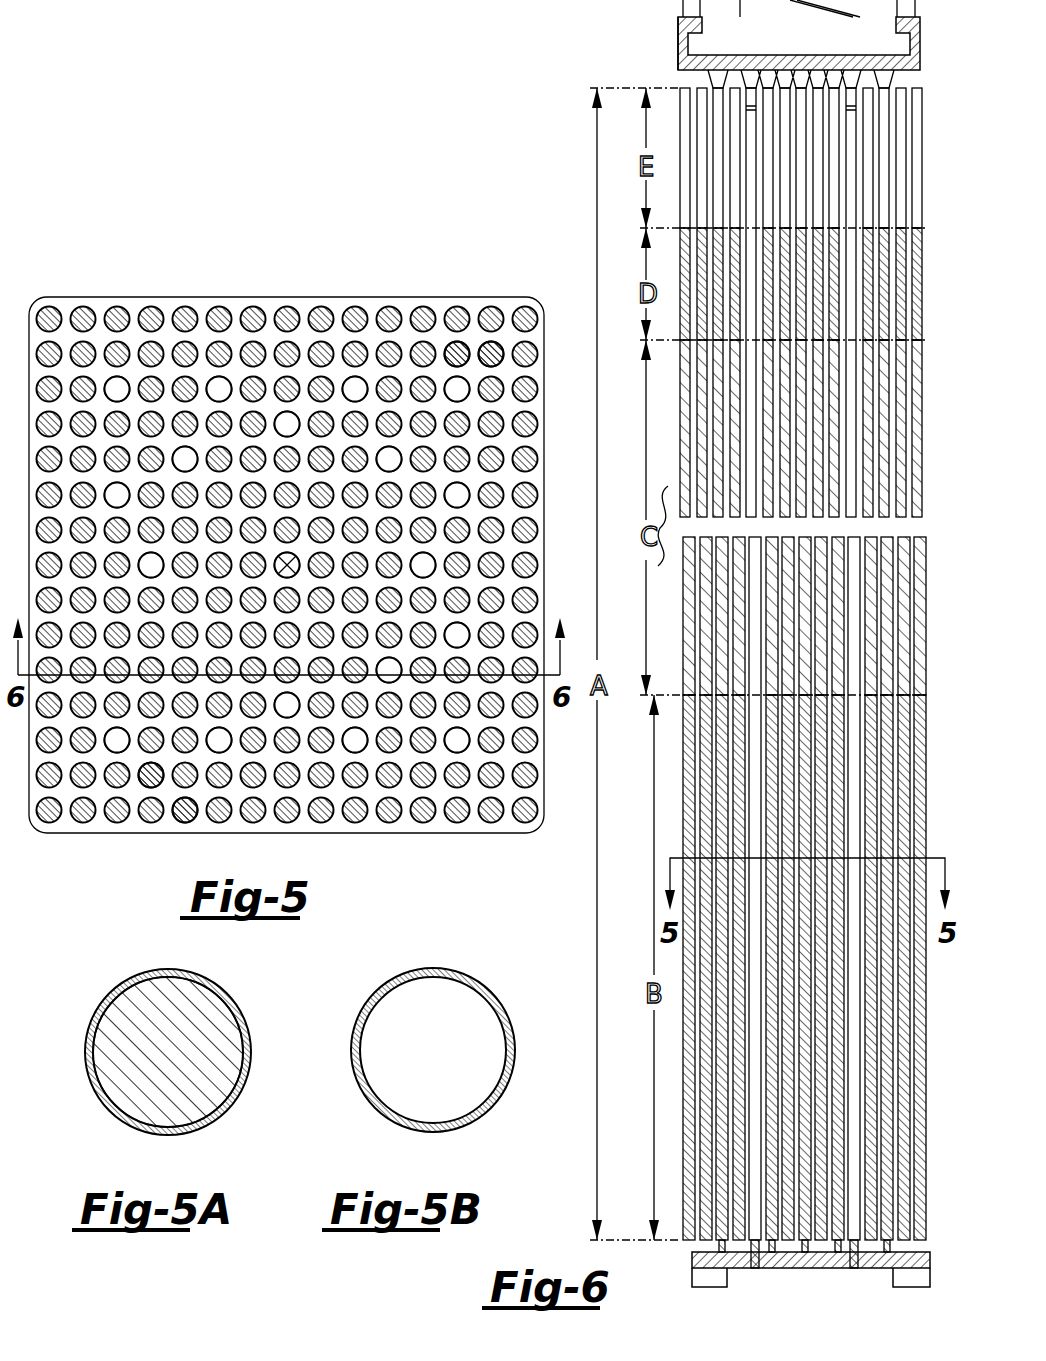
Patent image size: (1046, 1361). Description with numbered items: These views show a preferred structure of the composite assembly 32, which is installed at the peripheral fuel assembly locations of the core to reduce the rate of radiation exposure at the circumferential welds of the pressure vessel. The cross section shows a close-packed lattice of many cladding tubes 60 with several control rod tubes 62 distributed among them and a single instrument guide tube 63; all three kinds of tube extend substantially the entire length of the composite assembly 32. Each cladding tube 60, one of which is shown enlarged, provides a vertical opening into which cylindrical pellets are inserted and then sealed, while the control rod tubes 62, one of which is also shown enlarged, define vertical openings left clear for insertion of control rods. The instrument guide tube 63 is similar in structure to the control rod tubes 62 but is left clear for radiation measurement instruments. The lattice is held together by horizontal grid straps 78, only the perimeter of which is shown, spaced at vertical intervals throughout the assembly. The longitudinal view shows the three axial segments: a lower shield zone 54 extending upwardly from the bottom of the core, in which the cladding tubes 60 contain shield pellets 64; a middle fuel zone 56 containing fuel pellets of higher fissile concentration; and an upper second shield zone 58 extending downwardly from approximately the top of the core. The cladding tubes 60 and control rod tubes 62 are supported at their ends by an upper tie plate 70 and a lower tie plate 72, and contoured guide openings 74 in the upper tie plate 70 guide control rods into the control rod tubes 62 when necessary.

In FIG. 5, the composite assembly 32 is at (194, 278).
In FIG. 6, the composite assembly 32 is at (633, 66).
In FIG. 6, the shield zone 54 is at (870, 770).
In FIG. 6, the fuel zone 56 is at (710, 418).
In FIG. 6, the second shield zone 58 is at (710, 275).
In FIG. 5, the cladding tube 60 is at (134, 343).
In FIG. 5A, the cladding tube 60 is at (139, 972).
In FIG. 6, the cladding tube 60 is at (890, 180).
In FIG. 5, the control rod tube 62 is at (446, 378).
In FIG. 5B, the control rod tube 62 is at (462, 976).
In FIG. 6, the control rod tube 62 is at (752, 140).
In FIG. 5, the instrument guide tube 63 is at (276, 572).
In FIG. 5, the shield pellets 64 is at (493, 342).
In FIG. 5A, the shield pellets 64 is at (210, 1018).
In FIG. 6, the shield pellets 64 is at (740, 1070).
In FIG. 6, the upper tie plate 70 is at (680, 32).
In FIG. 6, the lower tie plate 72 is at (800, 1268).
In FIG. 6, the contoured guide openings 74 is at (847, 72).
In FIG. 5, the horizontal grid straps 78 is at (297, 296).